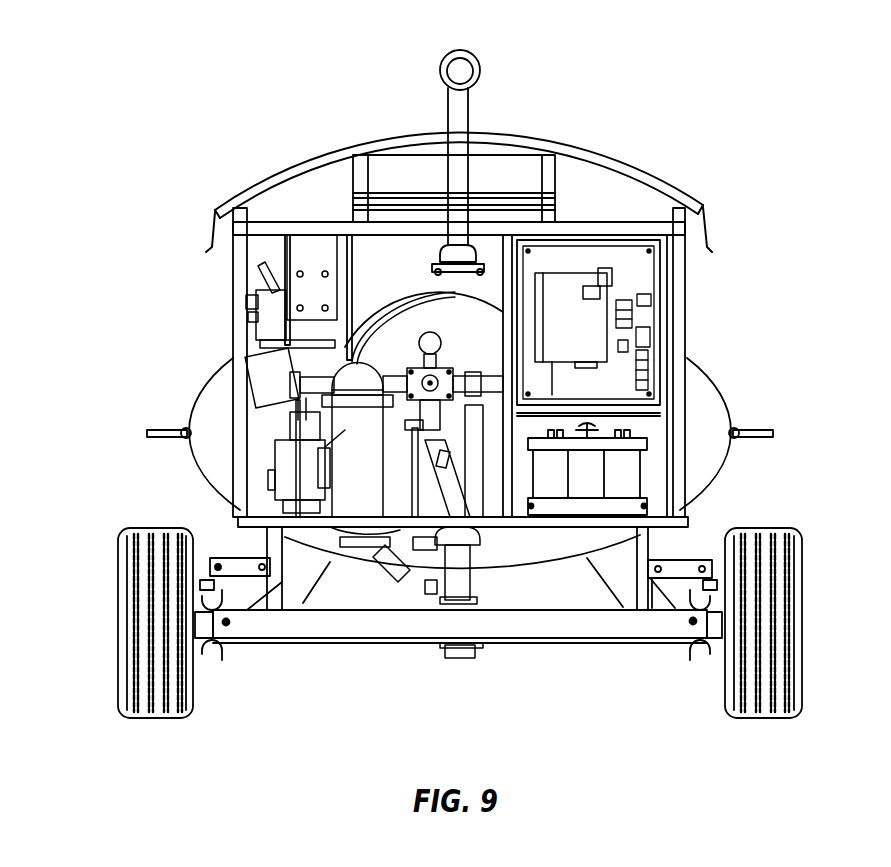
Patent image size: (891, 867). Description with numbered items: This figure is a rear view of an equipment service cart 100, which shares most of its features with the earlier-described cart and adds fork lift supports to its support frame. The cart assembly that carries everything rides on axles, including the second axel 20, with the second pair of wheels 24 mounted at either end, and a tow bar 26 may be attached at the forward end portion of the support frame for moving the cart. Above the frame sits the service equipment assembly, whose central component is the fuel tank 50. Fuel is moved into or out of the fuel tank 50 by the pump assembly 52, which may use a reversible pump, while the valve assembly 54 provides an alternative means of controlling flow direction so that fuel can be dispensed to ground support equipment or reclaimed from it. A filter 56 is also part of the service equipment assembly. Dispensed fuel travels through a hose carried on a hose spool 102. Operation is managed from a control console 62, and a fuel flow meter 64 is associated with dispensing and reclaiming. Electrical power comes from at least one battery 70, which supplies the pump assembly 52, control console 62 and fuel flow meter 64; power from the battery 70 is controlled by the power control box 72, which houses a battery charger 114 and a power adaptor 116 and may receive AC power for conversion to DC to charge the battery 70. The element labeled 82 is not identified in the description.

The second axel 20 is at (573, 625).
The second pair of wheels 24 is at (127, 627).
The tow bar 26 is at (440, 68).
The fuel tank 50 is at (736, 396).
The pump assembly 52 is at (262, 481).
The valve assembly 54 is at (450, 366).
The filter 56 is at (360, 532).
The control console 62 is at (255, 292).
The fuel flow meter 64 is at (268, 352).
The battery 70 is at (635, 466).
The power control box 72 is at (657, 276).
The canopy 82 is at (487, 130).
The equipment service cart 100 is at (782, 148).
The hose spool 102 is at (350, 300).
The battery charger 114 is at (587, 315).
The power adaptor 116 is at (627, 370).